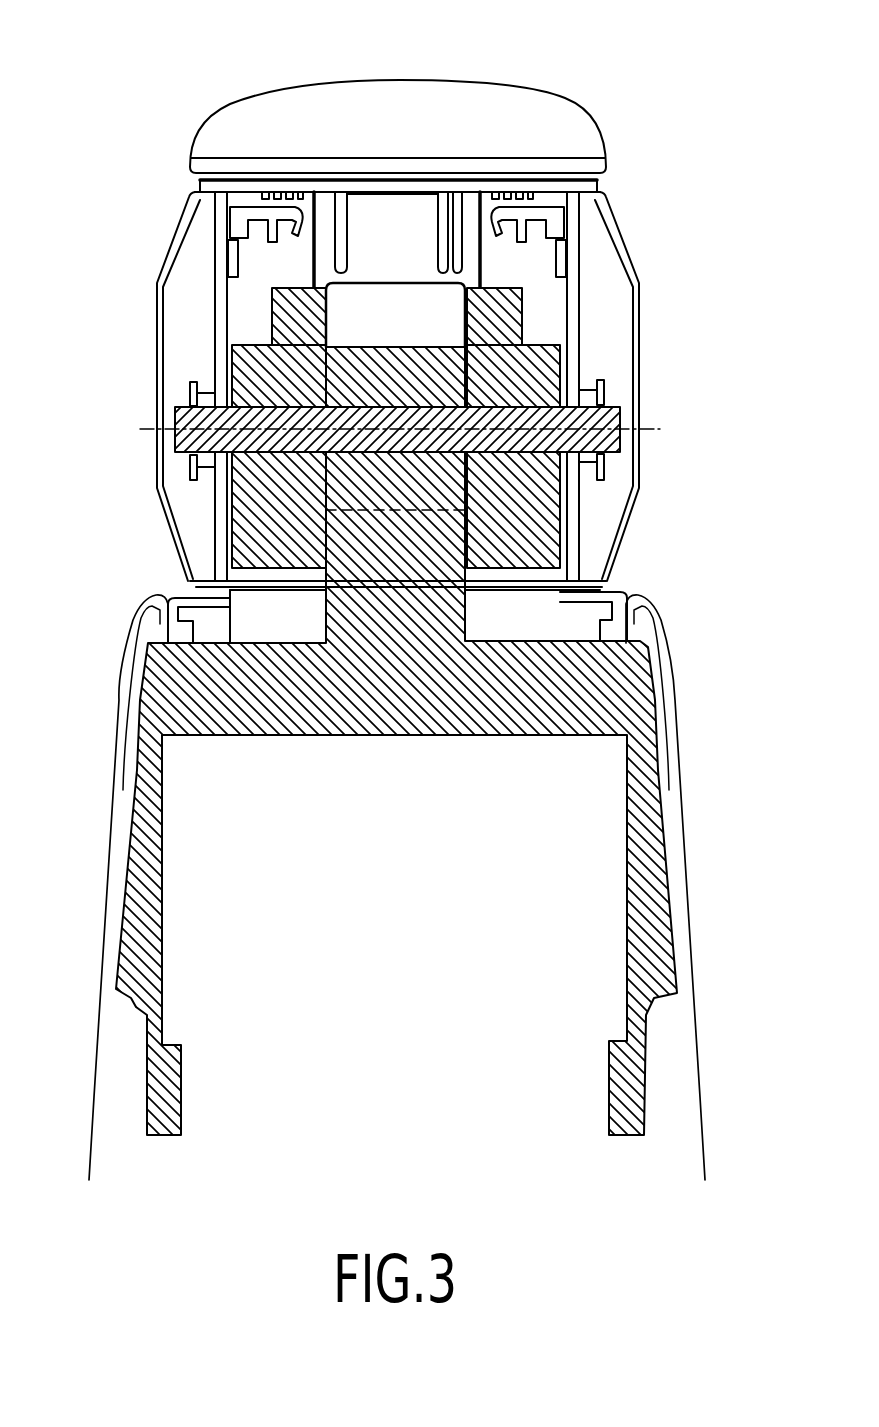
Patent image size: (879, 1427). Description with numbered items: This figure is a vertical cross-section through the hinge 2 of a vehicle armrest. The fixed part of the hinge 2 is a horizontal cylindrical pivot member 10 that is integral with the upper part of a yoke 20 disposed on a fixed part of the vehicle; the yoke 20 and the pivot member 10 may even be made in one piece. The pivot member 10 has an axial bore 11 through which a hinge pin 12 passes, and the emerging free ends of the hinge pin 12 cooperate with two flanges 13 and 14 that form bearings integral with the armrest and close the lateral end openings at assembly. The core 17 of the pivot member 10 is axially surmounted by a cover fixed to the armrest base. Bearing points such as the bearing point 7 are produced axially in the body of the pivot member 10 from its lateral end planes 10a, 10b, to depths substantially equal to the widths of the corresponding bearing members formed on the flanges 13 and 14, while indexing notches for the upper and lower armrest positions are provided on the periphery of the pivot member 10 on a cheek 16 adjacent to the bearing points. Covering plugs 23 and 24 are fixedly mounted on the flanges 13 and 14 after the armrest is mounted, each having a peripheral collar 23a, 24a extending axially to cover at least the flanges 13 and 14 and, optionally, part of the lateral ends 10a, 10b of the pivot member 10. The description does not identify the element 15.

The hinge 2 is at (160, 227).
The bearing point 7 is at (262, 340).
The pivot member 10 is at (412, 332).
The lateral end plane of pivot member 10a is at (563, 360).
The lateral end plane of pivot member 10b is at (224, 372).
The axial bore 11 is at (275, 505).
The hinge pin 12 is at (617, 428).
The flange 13 is at (573, 255).
The flange 14 is at (219, 291).
The pin 15 is at (186, 388).
The cheek 16 is at (305, 192).
The core 17 is at (398, 347).
The yoke 20 is at (585, 684).
The covering plug 23 is at (158, 470).
The peripheral collar 23a is at (276, 585).
The covering plug 24 is at (638, 512).
The peripheral collar 24a is at (525, 615).